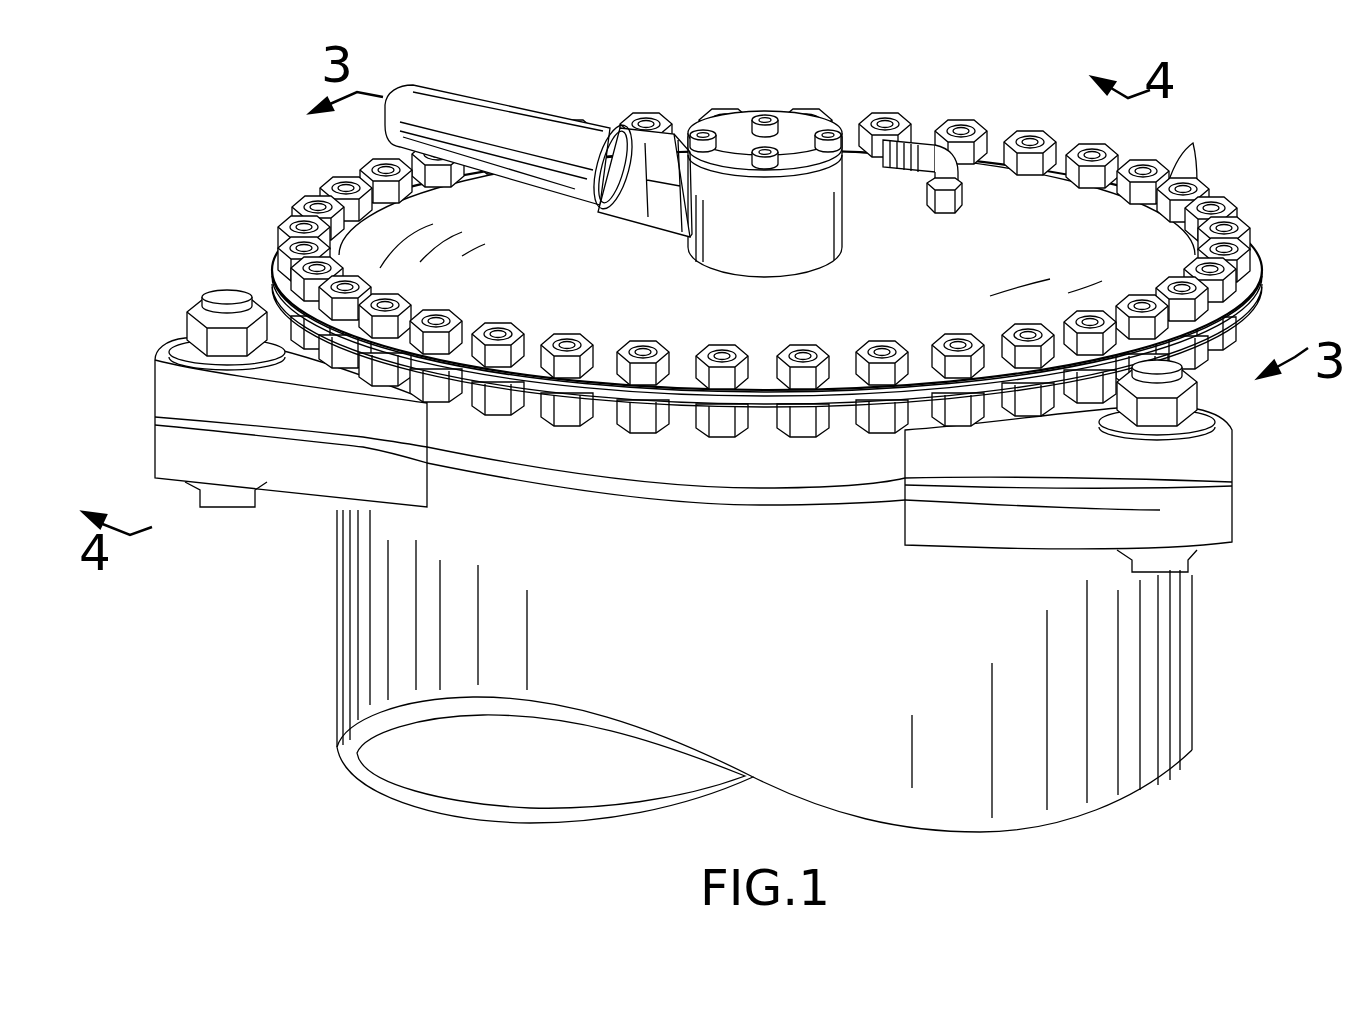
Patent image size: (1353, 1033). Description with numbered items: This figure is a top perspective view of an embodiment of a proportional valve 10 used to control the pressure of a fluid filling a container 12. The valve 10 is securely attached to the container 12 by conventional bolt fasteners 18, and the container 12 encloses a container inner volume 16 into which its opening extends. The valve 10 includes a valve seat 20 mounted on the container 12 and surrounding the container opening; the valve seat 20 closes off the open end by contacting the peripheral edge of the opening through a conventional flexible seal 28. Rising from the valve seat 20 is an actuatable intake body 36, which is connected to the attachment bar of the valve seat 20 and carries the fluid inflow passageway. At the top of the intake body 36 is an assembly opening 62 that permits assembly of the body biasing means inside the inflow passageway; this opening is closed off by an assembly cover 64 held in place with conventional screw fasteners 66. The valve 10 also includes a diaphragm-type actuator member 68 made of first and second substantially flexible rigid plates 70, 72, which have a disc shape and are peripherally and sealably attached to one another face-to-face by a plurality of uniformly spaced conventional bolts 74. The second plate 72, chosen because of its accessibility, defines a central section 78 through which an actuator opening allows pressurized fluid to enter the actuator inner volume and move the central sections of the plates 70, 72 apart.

The proportional valve 10 is at (736, 441).
The container 12 is at (1193, 638).
The container inner volume 16 is at (405, 757).
The bolt fasteners 18 is at (196, 306).
The valve seat 20 is at (490, 447).
The flexible seal 28 is at (568, 485).
The actuatable intake body 36 is at (797, 255).
The assembly opening 62 is at (738, 142).
The assembly cover 64 is at (842, 174).
The screw fasteners 66 is at (840, 128).
The actuator member 68 is at (1258, 285).
The first plate 70 is at (1258, 300).
The second plate 72 is at (990, 172).
The bolts 74 is at (1195, 150).
The central section 78 is at (1030, 282).